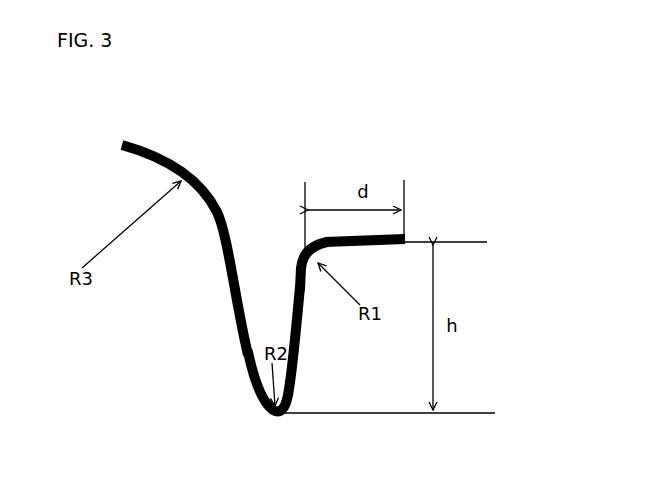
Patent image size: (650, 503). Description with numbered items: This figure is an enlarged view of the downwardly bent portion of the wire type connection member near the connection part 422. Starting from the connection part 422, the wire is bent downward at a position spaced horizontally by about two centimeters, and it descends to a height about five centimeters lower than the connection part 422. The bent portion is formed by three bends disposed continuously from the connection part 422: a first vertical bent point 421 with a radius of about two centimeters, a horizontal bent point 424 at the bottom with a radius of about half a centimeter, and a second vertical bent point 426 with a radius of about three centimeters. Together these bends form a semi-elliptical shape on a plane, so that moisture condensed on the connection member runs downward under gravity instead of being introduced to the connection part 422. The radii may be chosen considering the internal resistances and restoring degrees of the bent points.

The second vertical bent point 426 is at (183, 165).
The first vertical bent point 421 is at (305, 252).
The connection part 422 is at (405, 239).
The horizontal bent point 424 is at (276, 413).